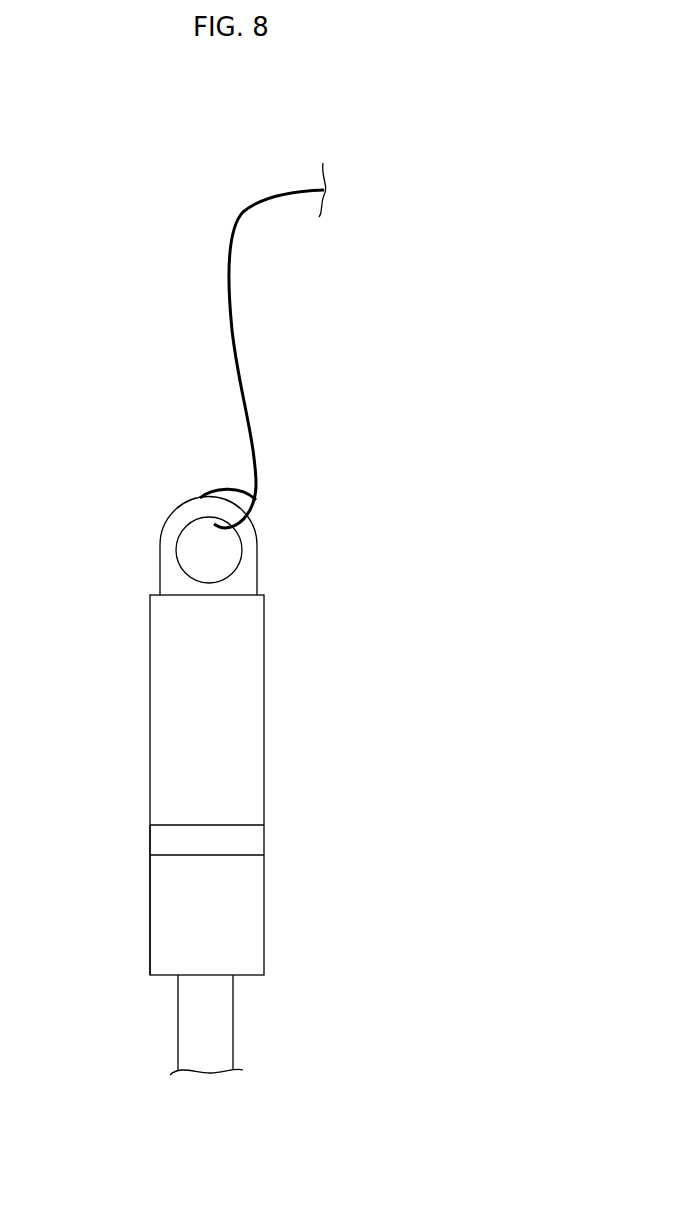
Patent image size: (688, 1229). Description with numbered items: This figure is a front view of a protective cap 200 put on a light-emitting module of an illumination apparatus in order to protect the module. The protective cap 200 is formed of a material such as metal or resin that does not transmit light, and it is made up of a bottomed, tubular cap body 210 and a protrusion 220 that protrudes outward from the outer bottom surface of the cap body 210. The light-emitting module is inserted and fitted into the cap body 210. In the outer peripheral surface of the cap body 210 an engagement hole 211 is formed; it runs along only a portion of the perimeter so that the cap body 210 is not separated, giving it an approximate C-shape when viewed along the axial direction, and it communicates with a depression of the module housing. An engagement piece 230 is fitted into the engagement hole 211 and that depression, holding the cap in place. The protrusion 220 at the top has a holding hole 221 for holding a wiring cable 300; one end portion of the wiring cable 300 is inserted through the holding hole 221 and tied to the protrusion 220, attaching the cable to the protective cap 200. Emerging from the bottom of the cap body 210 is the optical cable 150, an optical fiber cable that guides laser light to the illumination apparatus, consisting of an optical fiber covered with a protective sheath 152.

The wiring cable 300 is at (250, 402).
The protective cap 200 is at (203, 736).
The protrusion 220 is at (248, 552).
The holding hole 221 is at (182, 548).
The cap body 210 is at (264, 740).
The engagement piece 230 is at (263, 848).
The engagement hole 211 is at (150, 855).
The optical cable 150 is at (223, 1025).
The protective sheath 152 is at (188, 1018).